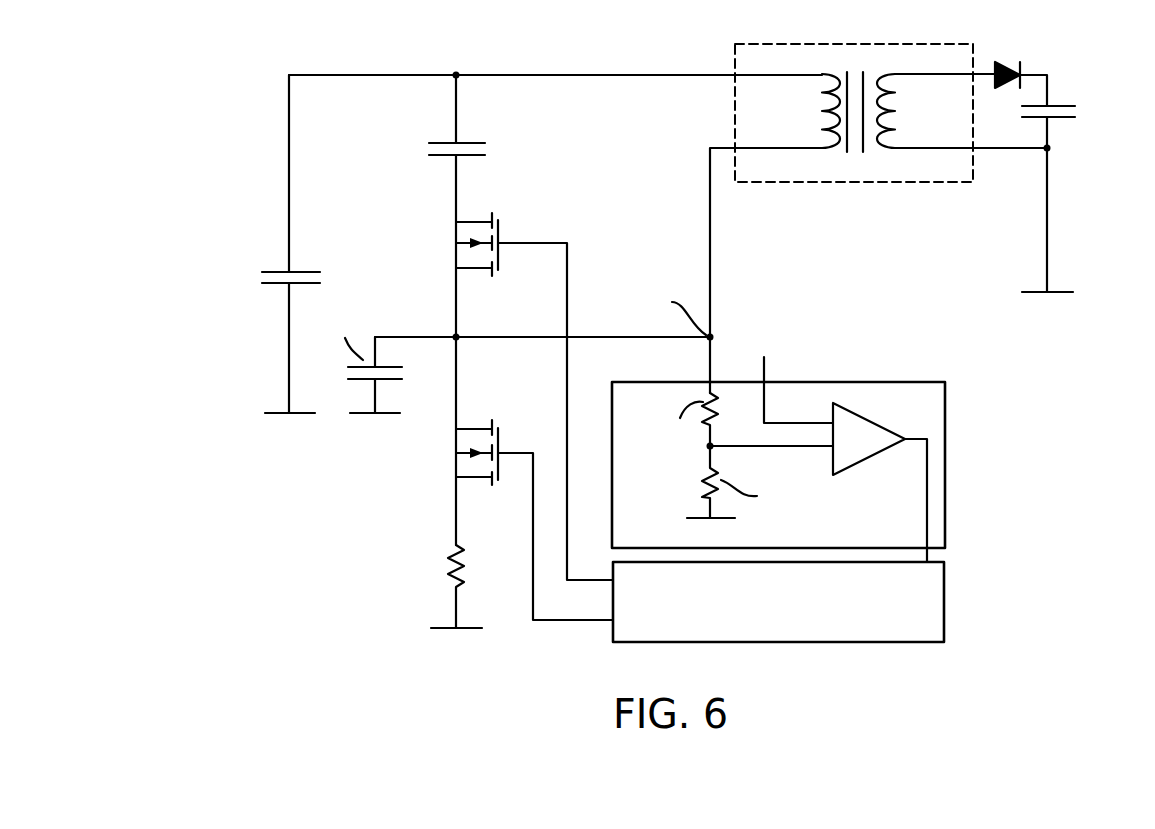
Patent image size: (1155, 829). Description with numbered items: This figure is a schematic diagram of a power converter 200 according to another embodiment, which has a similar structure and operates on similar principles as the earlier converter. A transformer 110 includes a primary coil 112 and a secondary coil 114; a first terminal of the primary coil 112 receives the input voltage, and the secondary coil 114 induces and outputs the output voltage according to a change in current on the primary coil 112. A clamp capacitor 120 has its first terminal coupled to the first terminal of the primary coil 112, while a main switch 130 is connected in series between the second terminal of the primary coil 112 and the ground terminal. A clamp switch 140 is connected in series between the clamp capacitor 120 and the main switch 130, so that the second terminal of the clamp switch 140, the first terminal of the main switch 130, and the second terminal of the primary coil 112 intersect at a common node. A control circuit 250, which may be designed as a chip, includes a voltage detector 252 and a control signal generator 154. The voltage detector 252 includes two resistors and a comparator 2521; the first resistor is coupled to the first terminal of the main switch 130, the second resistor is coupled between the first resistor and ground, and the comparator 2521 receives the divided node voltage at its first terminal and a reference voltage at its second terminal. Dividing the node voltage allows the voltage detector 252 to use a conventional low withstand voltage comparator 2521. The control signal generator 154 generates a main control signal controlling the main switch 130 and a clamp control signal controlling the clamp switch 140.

The power converter 200 is at (224, 136).
The transformer 110 is at (853, 183).
The primary coil 112 is at (816, 118).
The secondary coil 114 is at (893, 95).
The clamp capacitor 120 is at (421, 152).
The main switch 130 is at (452, 470).
The clamp switch 140 is at (452, 238).
The control signal generator 154 is at (945, 590).
The control circuit 250 is at (1032, 465).
The voltage detector 252 is at (945, 440).
The comparator 2521 is at (862, 407).